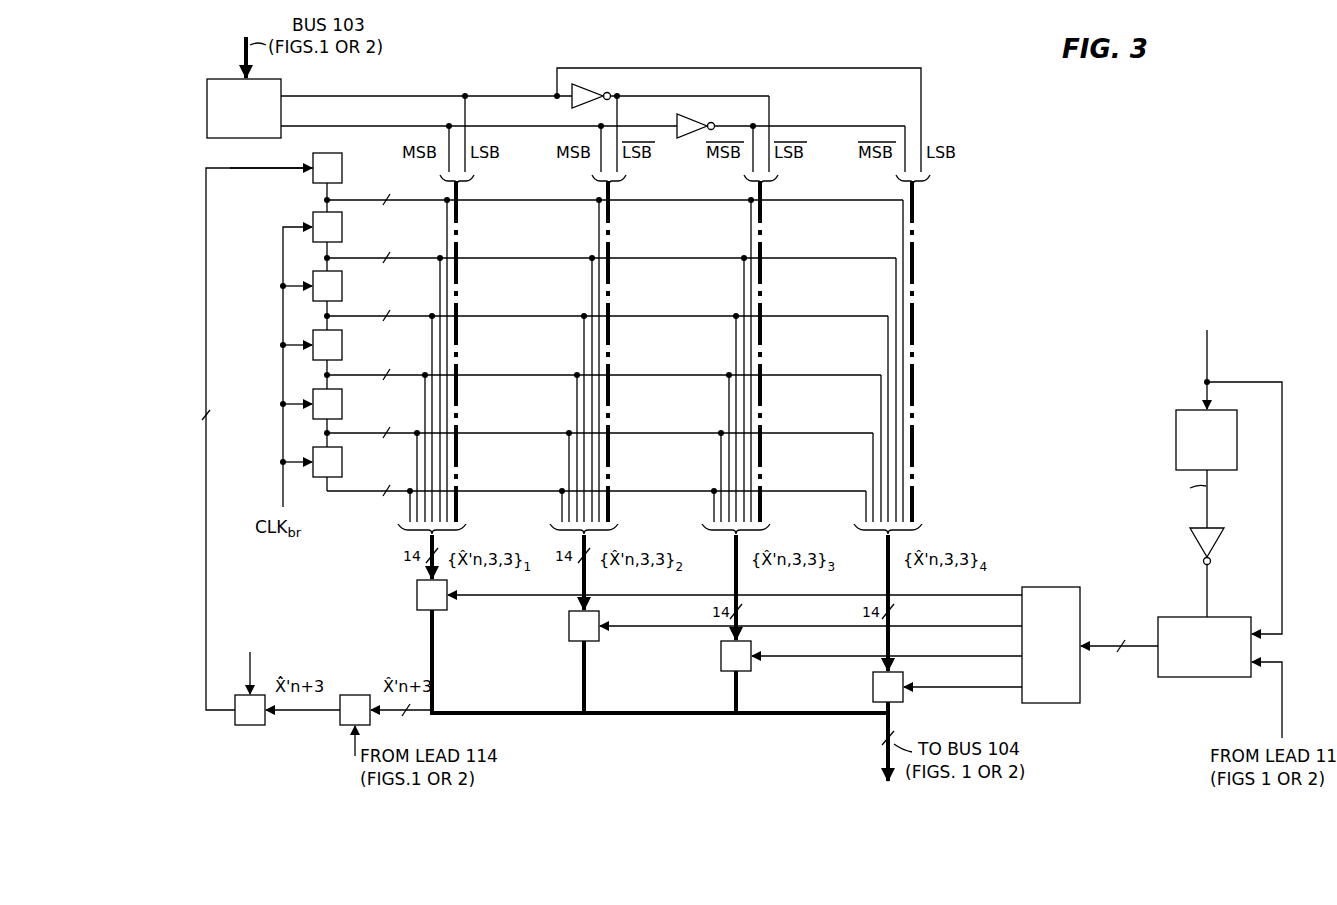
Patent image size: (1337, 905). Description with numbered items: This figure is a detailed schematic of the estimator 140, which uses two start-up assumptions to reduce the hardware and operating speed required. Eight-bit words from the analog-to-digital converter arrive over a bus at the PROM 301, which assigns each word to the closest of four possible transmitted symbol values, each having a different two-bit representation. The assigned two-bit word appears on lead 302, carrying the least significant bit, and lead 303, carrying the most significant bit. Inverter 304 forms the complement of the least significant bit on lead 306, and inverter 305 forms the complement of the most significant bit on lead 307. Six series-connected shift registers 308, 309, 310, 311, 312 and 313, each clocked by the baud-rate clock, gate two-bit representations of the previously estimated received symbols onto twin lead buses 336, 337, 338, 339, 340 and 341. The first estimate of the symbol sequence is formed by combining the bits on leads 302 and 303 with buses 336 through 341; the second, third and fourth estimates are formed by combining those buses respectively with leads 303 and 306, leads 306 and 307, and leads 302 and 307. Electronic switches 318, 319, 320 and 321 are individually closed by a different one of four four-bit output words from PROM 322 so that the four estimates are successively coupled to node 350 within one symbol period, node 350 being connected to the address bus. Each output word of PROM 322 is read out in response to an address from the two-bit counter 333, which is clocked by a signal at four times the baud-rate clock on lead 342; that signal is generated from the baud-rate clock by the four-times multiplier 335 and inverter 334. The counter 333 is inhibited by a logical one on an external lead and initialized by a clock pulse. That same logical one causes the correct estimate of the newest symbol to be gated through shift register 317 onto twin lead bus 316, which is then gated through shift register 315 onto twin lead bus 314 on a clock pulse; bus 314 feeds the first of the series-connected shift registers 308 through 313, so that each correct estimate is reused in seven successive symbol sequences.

The estimator 140 is at (530, 57).
The PROM 301 is at (207, 108).
The lead 302 is at (406, 96).
The lead 303 is at (406, 126).
The inverter 304 is at (570, 100).
The inverter 305 is at (688, 138).
The lead 306 is at (696, 96).
The lead 307 is at (824, 126).
The shift register 308 is at (343, 170).
The shift register 309 is at (343, 229).
The shift register 310 is at (343, 288).
The shift register 311 is at (343, 347).
The shift register 312 is at (343, 406).
The shift register 313 is at (343, 464).
The twin lead bus 314 is at (206, 380).
The shift register 315 is at (235, 724).
The twin lead bus 316 is at (285, 716).
The shift register 317 is at (342, 726).
The electronic switch 318 is at (416, 598).
The electronic switch 319 is at (568, 628).
The electronic switch 320 is at (720, 658).
The electronic switch 321 is at (872, 688).
The PROM 322 is at (1050, 703).
The 2-bit counter 333 is at (1158, 626).
The inverter 334 is at (1190, 540).
The 4 times multiplier 335 is at (1176, 440).
The lead 336 is at (502, 203).
The lead 337 is at (502, 261).
The lead 338 is at (502, 319).
The lead 339 is at (502, 378).
The lead 340 is at (502, 436).
The lead 341 is at (502, 494).
The lead 342 is at (1207, 581).
The node 350 is at (894, 720).